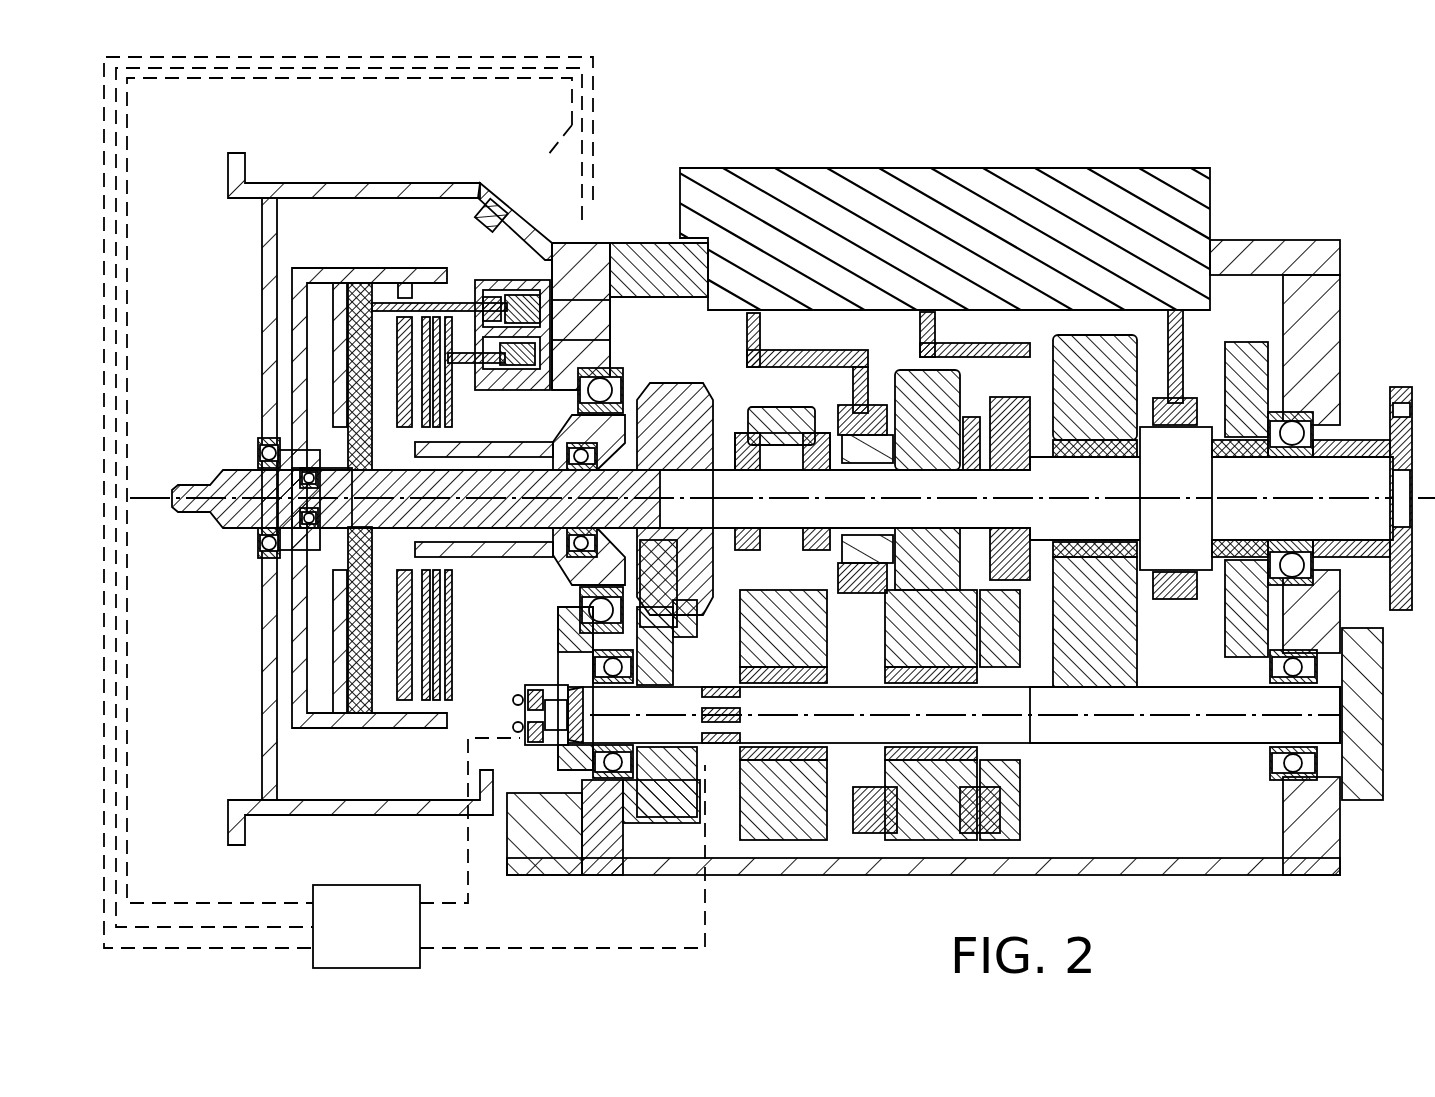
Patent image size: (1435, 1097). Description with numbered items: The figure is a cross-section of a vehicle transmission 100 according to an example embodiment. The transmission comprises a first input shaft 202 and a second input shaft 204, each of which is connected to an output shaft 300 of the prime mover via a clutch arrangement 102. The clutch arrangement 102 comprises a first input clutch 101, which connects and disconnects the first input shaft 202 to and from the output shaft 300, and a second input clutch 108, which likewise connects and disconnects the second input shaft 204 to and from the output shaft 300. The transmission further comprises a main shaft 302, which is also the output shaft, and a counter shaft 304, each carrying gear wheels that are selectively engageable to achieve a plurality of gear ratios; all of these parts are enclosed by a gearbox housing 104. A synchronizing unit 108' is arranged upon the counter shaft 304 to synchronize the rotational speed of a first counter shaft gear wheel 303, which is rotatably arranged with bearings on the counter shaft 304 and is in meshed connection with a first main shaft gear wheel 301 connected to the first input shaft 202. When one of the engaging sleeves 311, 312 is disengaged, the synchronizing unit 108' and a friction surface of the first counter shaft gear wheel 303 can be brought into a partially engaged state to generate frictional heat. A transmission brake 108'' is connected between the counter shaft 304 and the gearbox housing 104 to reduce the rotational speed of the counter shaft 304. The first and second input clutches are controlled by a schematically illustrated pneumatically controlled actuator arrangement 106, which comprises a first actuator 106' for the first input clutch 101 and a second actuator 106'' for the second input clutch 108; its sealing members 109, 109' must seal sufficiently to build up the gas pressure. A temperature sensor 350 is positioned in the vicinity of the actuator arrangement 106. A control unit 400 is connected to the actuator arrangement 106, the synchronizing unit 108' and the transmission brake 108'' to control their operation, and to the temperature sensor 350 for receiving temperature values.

The vehicle transmission 100 is at (948, 108).
The first input clutch 101 is at (353, 360).
The clutch arrangement 102 is at (346, 250).
The gearbox housing 104 is at (466, 152).
The pneumatically controlled actuator arrangement 106 is at (474, 457).
The first actuator 106' is at (652, 218).
The second actuator 106'' is at (697, 211).
The second input clutch 108 is at (315, 508).
The synchronizing unit 108' is at (954, 814).
The transmission brake 108'' is at (464, 775).
The sealing member 109 is at (436, 215).
The sealing member 109' is at (426, 256).
The first input shaft 202 is at (347, 487).
The second input shaft 204 is at (497, 543).
The output shaft of the prime mover 300 is at (210, 483).
The first main shaft gear wheel 301 is at (797, 400).
The main shaft 302 is at (920, 490).
The first counter shaft gear wheel 303 is at (773, 803).
The counter shaft 304 is at (1180, 727).
The engaging sleeve 311 is at (893, 803).
The engaging sleeve 312 is at (1007, 790).
The temperature sensor 350 is at (523, 255).
The control unit 400 is at (347, 883).